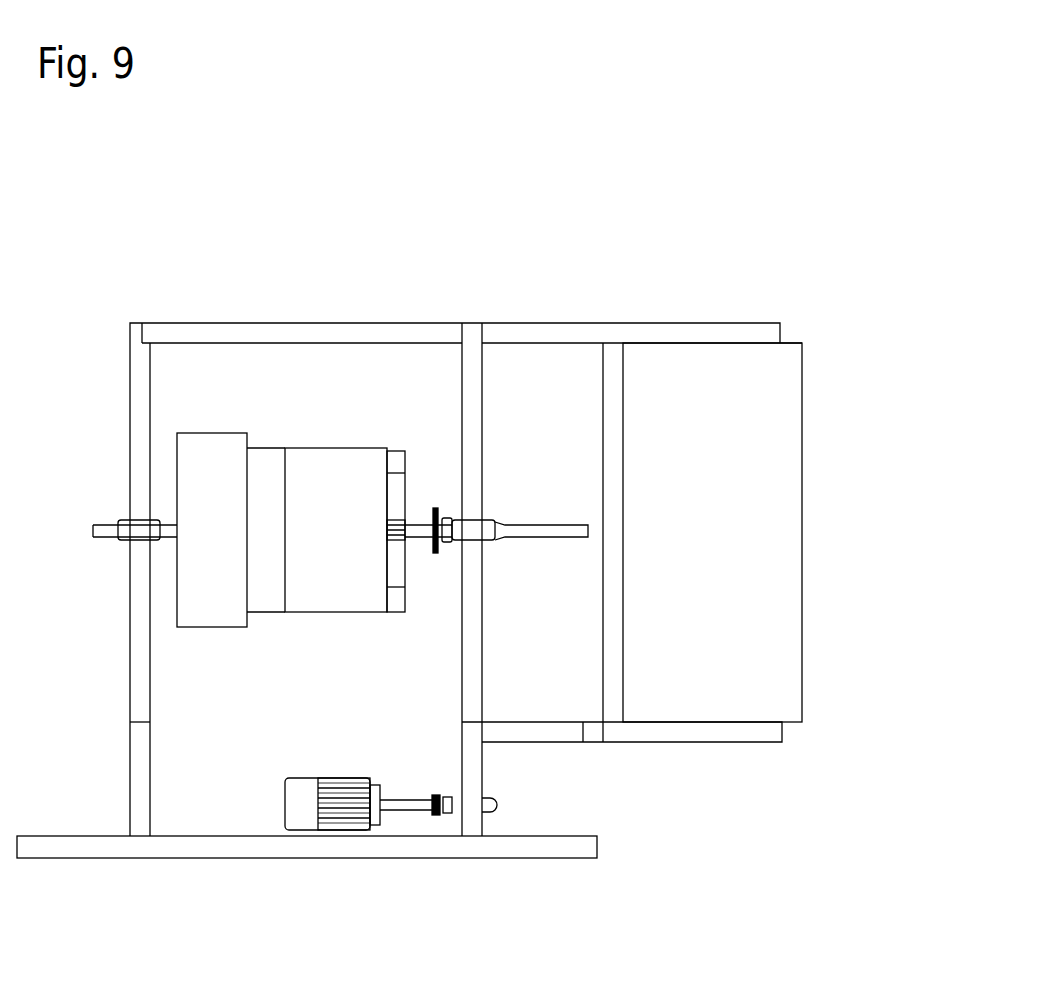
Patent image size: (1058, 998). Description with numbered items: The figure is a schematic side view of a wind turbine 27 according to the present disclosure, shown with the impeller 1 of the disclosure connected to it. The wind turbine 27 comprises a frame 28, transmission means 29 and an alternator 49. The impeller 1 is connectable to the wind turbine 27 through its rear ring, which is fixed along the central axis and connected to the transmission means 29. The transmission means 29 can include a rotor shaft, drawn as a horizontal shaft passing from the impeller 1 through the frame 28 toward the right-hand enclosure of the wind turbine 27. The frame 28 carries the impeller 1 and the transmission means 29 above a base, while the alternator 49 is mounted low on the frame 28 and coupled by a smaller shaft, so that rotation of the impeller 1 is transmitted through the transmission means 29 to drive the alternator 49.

The impeller 1 is at (343, 437).
The wind turbine 27 is at (830, 337).
The frame 28 is at (392, 315).
The transmission means 29 is at (418, 508).
The alternator 49 is at (322, 772).